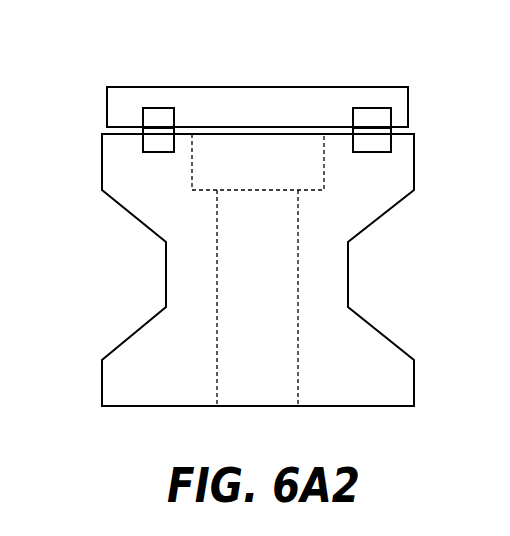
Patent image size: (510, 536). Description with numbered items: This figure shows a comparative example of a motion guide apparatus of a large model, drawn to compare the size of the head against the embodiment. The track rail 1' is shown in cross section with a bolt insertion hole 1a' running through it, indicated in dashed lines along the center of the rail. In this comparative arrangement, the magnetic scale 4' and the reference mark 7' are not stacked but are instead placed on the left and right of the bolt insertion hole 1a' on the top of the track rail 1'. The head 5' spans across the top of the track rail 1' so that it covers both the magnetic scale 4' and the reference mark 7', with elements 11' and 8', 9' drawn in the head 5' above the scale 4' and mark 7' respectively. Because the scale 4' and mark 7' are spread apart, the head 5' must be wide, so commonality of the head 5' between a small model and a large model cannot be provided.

The track rail 1' is at (270, 270).
The bolt insertion hole 1a' is at (198, 270).
The magnetic scale 4' is at (113, 147).
The head 5' is at (257, 73).
The reference mark 7' is at (405, 146).
The upper fastening element 8' is at (401, 86).
The upper fastening element 9' is at (372, 118).
The upper fastening element 11' is at (168, 82).